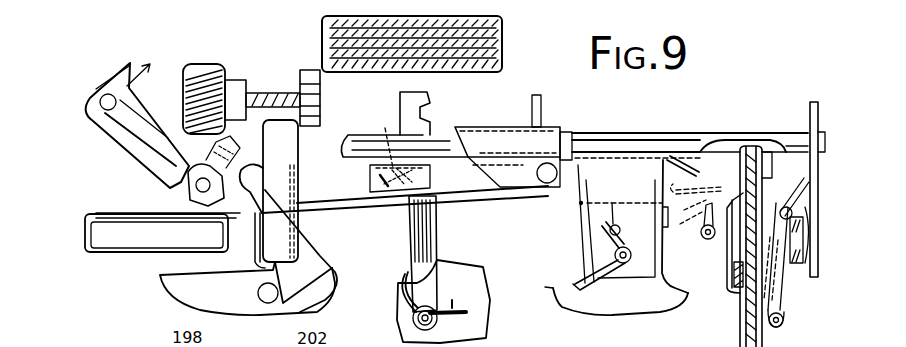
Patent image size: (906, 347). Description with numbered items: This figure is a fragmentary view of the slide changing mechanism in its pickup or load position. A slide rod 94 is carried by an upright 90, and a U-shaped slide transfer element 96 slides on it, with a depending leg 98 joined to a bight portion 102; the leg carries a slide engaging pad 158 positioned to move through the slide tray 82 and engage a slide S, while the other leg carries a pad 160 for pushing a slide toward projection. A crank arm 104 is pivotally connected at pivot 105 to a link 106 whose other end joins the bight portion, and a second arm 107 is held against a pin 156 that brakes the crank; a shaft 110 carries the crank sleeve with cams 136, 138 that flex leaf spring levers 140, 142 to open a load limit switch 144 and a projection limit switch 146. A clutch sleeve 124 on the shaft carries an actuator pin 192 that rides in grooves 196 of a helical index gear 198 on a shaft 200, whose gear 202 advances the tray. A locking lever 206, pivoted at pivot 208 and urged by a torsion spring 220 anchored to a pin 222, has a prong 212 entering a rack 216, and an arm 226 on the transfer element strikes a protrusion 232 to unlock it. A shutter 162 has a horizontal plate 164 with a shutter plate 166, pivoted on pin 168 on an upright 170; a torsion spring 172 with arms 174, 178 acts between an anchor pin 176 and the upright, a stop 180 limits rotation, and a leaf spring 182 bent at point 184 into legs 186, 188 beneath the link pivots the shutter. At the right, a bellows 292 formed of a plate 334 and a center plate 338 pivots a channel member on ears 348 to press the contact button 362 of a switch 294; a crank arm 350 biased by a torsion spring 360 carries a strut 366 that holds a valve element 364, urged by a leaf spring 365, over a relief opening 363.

The slide S is at (504, 42).
The slide tray 82 is at (322, 30).
The upright 90 is at (810, 107).
The slide rod 94 is at (612, 132).
The slide transfer element 96 is at (550, 122).
The leg portion 98 is at (226, 66).
The bight portion 102 is at (496, 126).
The arm 104 is at (97, 128).
The pivot 105 is at (102, 92).
The link 106 is at (314, 182).
The second arm 107 is at (312, 246).
The shaft 110 is at (188, 190).
The clutch sleeve 124 is at (164, 142).
The cam 136 is at (186, 206).
The cam 138 is at (186, 193).
The leaf spring lever 140 is at (112, 214).
The leaf spring lever 142 is at (250, 172).
The load limit switch 144 is at (106, 240).
The projection limit switch 146 is at (320, 128).
The pin 156 is at (258, 293).
The slide engaging pad 158 is at (262, 92).
The pad 160 is at (541, 110).
The shutter 162 is at (580, 204).
The horizontally extending plate 164 is at (578, 192).
The shutter plate 166 is at (640, 158).
The pivot pin 168 is at (622, 268).
The upright 170 is at (582, 304).
The torsion spring 172 is at (614, 255).
The arm 174 is at (603, 230).
The anchor pin 176 is at (608, 208).
The arm 178 is at (575, 284).
The stop 180 is at (660, 208).
The leaf spring 182 is at (380, 141).
The bend point 184 is at (383, 200).
The leg 186 is at (432, 177).
The free bent leg 188 is at (370, 182).
The actuator pin 192 is at (248, 142).
The grooves 196 is at (184, 90).
The helical index gear 198 is at (204, 60).
The shaft 200 is at (258, 80).
The gear 202 is at (308, 72).
The locking lever 206 is at (437, 222).
The pivot 208 is at (488, 322).
The prong 212 is at (400, 93).
The rack 216 is at (462, 106).
The torsion spring 220 is at (432, 300).
The pin 222 is at (453, 306).
The arm 226 is at (445, 124).
The protrusion 232 is at (466, 143).
The bellows 292 is at (751, 148).
The switch 294 is at (790, 292).
The saucer-like plate 334 is at (740, 326).
The circular plate 338 is at (768, 182).
The ears 348 is at (806, 262).
The crank arm 350 is at (707, 196).
The torsion spring 360 is at (806, 180).
The contact button 362 is at (786, 312).
The opening 363 is at (733, 277).
The valve element 364 is at (742, 292).
The leaf spring 365 is at (727, 259).
The strut 366 is at (692, 225).